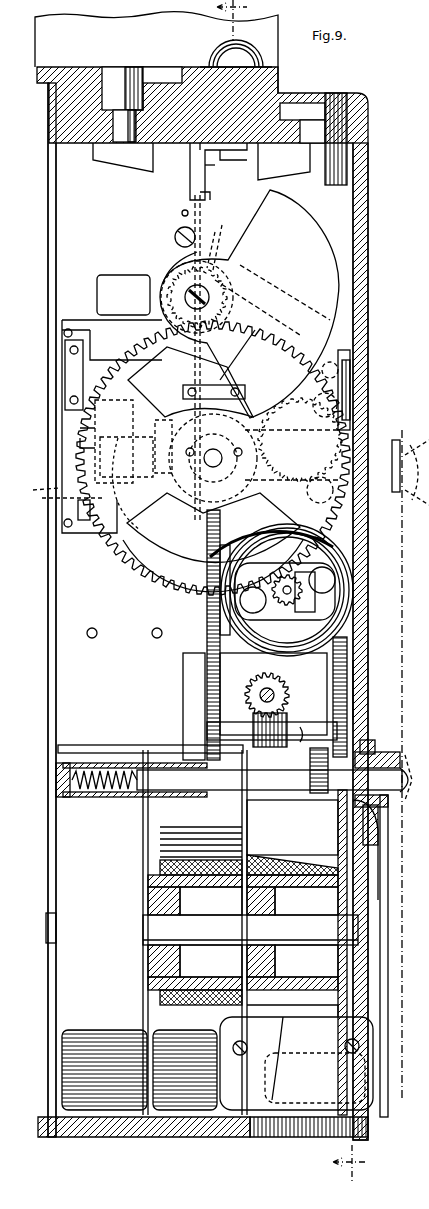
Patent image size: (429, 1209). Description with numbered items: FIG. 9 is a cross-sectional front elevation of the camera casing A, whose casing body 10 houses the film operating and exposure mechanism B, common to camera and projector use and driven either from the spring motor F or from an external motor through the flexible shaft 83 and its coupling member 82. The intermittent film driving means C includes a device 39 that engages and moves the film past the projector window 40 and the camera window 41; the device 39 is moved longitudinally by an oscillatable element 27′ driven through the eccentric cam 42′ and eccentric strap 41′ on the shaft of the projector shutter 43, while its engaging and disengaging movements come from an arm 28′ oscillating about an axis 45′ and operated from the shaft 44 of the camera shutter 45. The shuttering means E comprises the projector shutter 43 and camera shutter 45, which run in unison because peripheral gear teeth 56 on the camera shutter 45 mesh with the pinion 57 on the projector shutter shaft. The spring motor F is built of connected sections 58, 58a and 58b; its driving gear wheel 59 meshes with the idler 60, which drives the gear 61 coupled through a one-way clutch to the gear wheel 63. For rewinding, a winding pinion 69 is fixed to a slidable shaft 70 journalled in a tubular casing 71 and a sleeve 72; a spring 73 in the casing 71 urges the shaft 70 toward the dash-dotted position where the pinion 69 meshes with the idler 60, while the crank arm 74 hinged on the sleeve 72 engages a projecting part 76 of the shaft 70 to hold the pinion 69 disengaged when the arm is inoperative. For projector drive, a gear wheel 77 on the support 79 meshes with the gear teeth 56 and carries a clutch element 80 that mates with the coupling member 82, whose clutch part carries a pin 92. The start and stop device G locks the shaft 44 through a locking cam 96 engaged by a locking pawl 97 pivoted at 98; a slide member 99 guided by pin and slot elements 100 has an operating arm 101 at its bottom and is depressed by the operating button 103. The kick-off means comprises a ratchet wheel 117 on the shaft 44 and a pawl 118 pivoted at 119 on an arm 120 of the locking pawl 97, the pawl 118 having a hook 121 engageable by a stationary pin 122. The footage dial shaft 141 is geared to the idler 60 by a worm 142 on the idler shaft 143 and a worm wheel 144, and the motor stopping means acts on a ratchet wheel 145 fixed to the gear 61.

The casing body 10 is at (380, 127).
The operating button 103 is at (236, 42).
The camera casing A is at (280, 92).
The start and stop device G is at (190, 168).
The slide member 99 is at (205, 176).
The pin and slot elements 100 is at (205, 191).
The eccentric cam 42′ is at (220, 241).
The eccentric strap 41′ is at (223, 249).
The projector shutter 43 is at (318, 256).
The projector window 40 is at (97, 288).
The oscillatable element 27′ is at (168, 280).
The pinion 57 is at (245, 272).
The arm 28′ is at (250, 345).
The film shuttering or exposure means E is at (330, 345).
The axis 45′ is at (360, 325).
The film operating and exposure mechanism B is at (290, 410).
The hook 121 is at (368, 384).
The ratchet wheel 117 is at (190, 382).
The stationary pin 122 is at (319, 389).
The intermittent film driving means C is at (62, 418).
The film engaging device 39 is at (80, 443).
The pivot 119 is at (390, 460).
The pawl 118 is at (293, 440).
The camera shutter 45 is at (107, 520).
The arm 120 is at (403, 472).
The shutter shaft 44 is at (205, 462).
The operating arm 101 is at (308, 493).
The camera window 41 is at (62, 495).
The pivot 98 is at (368, 512).
The locking cam 96 is at (199, 635).
The locking pawl 97 is at (271, 536).
The crank arm 74 is at (398, 570).
The peripheral gear teeth 56 is at (150, 570).
The gear wheel 77 is at (312, 596).
The ratchet wheel 145 is at (348, 608).
The coupling member 82 is at (418, 602).
The gear wheel 63 is at (207, 613).
The clutch element 80 is at (280, 605).
The pin 92 is at (296, 602).
The gear 61 is at (348, 649).
The support 79 is at (235, 625).
The idler 60 is at (356, 700).
The worm wheel 144 is at (250, 690).
The shaft 141 is at (272, 692).
The worm 142 is at (282, 720).
The idler shaft 143 is at (272, 723).
The sleeve 72 is at (370, 740).
The projecting part 76 is at (413, 767).
The tubular casing 71 is at (108, 745).
The slidable shaft 70 is at (266, 774).
The spring 73 is at (92, 790).
The winding pinion 69 is at (312, 793).
The motor section 58 is at (258, 812).
The motor section 58a is at (165, 815).
The motor section 58b is at (80, 850).
The spring motor F is at (310, 838).
The driving gear wheel 59 is at (340, 850).
The flexible shaft 83 is at (423, 1047).